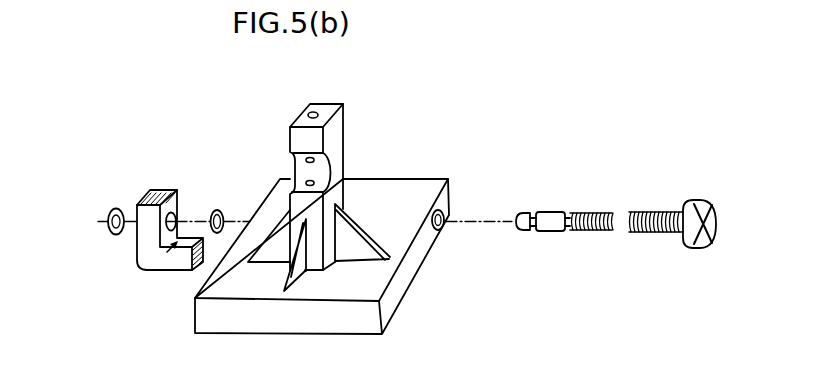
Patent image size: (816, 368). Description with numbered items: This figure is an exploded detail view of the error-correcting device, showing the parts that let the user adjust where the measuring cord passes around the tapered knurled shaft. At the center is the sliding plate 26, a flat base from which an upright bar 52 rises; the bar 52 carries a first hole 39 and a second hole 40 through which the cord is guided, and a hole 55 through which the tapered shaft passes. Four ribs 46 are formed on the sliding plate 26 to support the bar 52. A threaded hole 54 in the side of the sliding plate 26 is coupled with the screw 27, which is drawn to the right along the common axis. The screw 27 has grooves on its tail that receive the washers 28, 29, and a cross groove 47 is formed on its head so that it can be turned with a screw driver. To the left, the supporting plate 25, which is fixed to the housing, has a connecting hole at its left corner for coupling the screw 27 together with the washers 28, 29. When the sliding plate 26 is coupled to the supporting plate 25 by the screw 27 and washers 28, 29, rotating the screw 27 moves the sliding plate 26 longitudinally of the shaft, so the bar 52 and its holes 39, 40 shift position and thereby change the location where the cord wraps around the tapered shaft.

The supporting plate 25 is at (156, 262).
The sliding plate 26 is at (408, 272).
The screw 27 is at (616, 220).
The washer 28 is at (217, 208).
The washer 29 is at (114, 207).
The first hole 39 is at (307, 183).
The second hole 40 is at (314, 112).
The rib 46 is at (373, 240).
The cross groove 47 is at (699, 248).
The bar 52 is at (337, 135).
The threaded hole 54 is at (446, 219).
The hole 55 is at (323, 176).